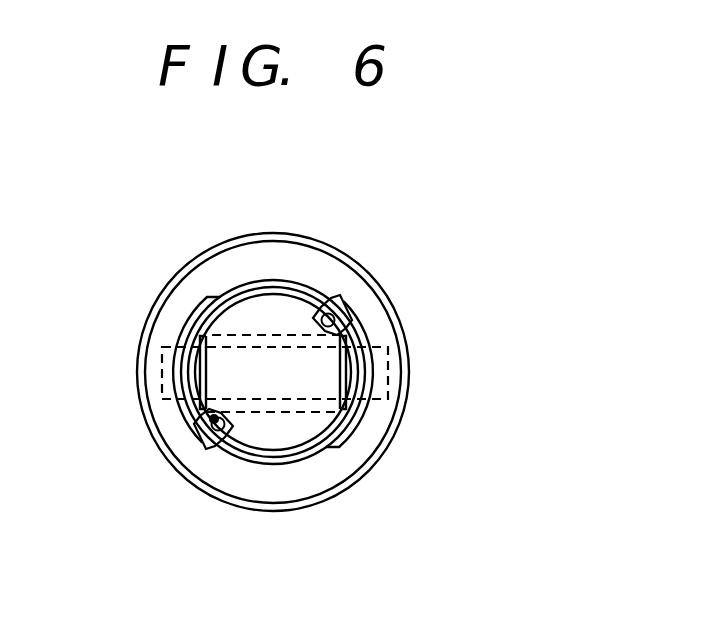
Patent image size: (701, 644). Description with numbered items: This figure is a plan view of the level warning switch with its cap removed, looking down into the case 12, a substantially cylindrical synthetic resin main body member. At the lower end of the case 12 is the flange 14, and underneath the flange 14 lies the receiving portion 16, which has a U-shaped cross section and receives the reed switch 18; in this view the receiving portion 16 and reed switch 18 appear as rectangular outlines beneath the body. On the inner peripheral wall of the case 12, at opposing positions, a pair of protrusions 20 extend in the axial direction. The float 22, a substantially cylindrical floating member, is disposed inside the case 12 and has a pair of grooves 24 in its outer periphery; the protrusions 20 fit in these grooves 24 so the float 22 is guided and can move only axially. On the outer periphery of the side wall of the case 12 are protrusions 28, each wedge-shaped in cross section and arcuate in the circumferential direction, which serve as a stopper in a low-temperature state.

The case 12 is at (296, 283).
The flange 14 is at (355, 292).
The receiving portion 16 is at (287, 414).
The reed switch 18 is at (162, 384).
The protrusions 20 is at (343, 324).
The float 22 is at (258, 456).
The grooves 24 is at (350, 296).
The protrusions 28 is at (197, 308).